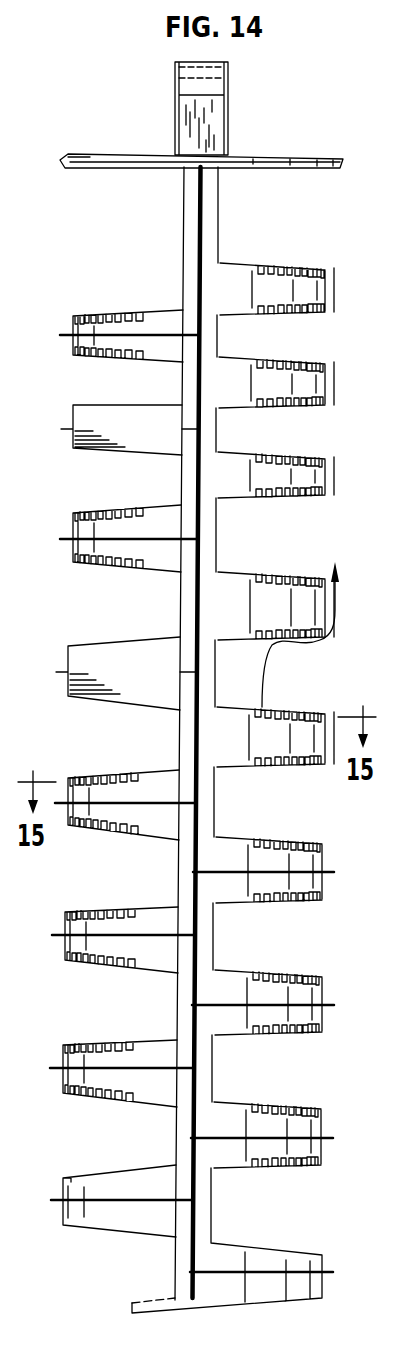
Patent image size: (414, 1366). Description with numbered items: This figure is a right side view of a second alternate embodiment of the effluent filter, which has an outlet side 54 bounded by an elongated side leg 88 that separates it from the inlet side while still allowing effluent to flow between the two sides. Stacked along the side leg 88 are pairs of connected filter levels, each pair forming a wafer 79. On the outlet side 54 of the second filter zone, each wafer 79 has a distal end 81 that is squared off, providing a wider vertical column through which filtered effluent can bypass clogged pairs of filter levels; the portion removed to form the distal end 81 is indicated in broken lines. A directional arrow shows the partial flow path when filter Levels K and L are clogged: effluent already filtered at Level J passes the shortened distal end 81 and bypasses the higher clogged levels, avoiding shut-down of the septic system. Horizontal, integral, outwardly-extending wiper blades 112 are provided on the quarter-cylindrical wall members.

The outlet side 54 is at (263, 148).
The elongated side leg 88 is at (187, 272).
The distal end 81 is at (305, 607).
The wafer 79 is at (298, 738).
The wiper blade 112 is at (67, 806).
The filter Level K is at (168, 638).
The filter Level L is at (294, 654).
The filter Level J is at (291, 703).